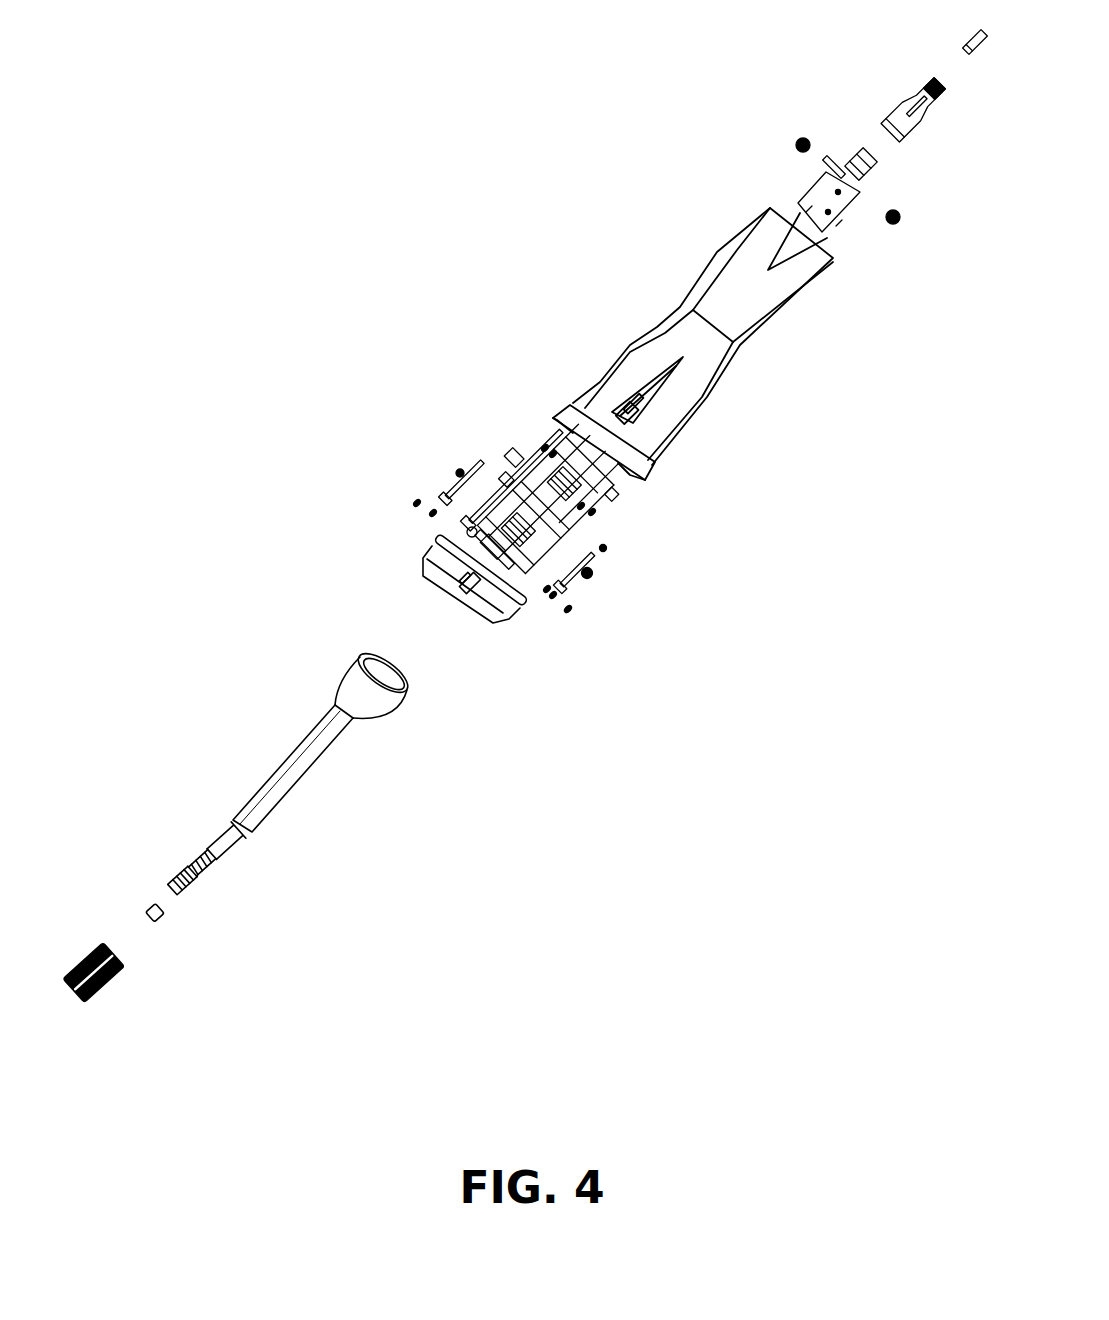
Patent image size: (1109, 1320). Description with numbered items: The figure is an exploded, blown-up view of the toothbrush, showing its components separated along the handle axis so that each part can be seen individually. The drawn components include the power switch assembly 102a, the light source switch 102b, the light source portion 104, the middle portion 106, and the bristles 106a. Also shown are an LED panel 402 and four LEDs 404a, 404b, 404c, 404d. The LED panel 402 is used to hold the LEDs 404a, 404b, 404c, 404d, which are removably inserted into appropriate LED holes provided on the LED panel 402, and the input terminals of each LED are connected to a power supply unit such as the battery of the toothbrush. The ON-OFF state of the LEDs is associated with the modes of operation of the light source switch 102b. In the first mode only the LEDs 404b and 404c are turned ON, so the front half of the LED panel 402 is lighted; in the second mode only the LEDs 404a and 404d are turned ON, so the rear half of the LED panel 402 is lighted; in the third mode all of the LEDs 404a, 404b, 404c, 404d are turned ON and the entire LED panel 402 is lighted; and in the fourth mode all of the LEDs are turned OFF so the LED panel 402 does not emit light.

The power switch assembly 102a is at (560, 480).
The light source switch 102b is at (530, 540).
The light source portion 104 is at (507, 618).
The middle portion 106 is at (300, 778).
The bristles 106a is at (130, 958).
The LED panel 402 is at (473, 533).
The LED 404a is at (567, 590).
The LED 404b is at (593, 572).
The LED 404c is at (473, 520).
The LED 404d is at (448, 498).